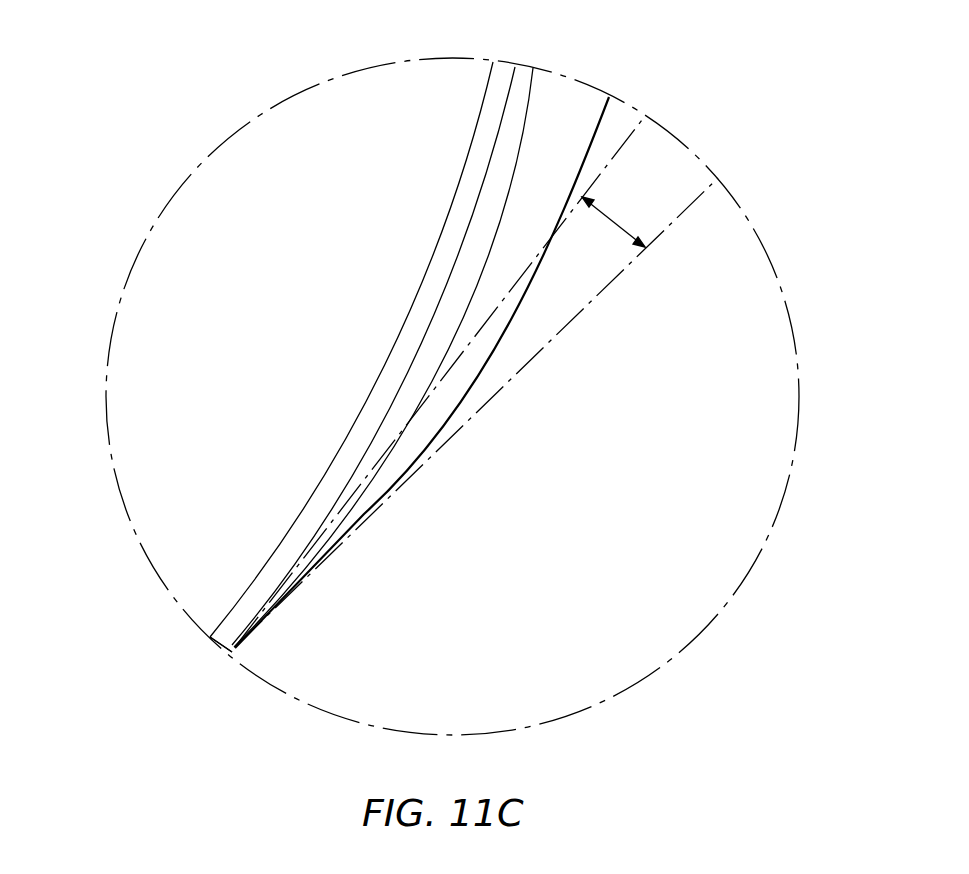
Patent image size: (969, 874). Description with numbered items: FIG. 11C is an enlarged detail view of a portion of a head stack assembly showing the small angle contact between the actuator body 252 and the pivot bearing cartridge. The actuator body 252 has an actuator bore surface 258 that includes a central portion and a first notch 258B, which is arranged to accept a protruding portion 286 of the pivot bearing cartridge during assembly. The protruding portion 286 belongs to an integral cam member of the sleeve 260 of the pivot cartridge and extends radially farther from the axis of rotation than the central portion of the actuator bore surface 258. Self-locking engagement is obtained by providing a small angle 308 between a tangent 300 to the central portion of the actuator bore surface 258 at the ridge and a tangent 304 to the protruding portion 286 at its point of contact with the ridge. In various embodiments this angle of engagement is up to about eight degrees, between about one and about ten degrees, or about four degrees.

The actuator body 252 is at (785, 447).
The protruding portion 286 is at (532, 97).
The first notch 258B is at (601, 115).
The tangent 300 is at (638, 117).
The tangent 304 is at (700, 197).
The small angle 308 is at (617, 217).
The actuator bore surface 258 is at (232, 643).
The sleeve 260 is at (173, 530).